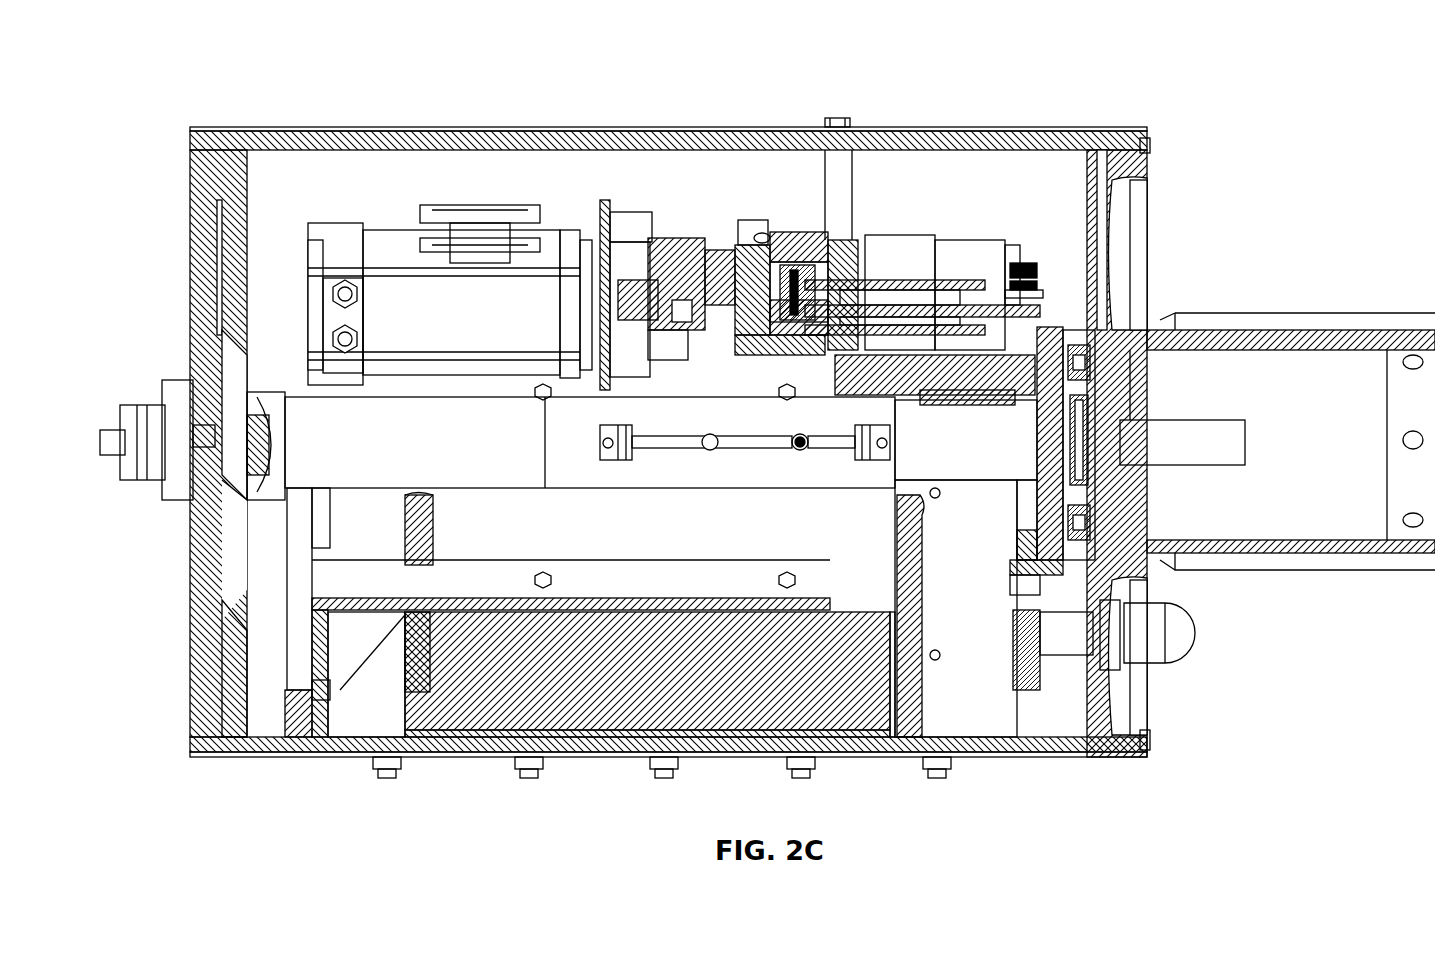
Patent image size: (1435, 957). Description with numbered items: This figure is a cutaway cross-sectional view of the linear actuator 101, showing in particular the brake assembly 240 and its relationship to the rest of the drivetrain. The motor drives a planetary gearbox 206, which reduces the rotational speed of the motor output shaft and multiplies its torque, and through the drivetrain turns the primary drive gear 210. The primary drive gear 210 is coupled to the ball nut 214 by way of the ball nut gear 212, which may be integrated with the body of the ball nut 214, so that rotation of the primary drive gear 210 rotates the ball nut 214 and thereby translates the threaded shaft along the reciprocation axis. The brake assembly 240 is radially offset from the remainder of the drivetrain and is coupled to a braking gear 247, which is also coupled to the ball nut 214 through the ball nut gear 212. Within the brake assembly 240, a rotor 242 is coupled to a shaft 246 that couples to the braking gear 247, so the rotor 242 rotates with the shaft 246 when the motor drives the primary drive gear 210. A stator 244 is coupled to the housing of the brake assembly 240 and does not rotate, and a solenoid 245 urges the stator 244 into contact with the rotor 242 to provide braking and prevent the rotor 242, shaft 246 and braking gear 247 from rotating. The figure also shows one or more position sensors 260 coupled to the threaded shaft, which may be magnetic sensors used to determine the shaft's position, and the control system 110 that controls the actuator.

The linear actuator 101 is at (190, 93).
The control system 110 is at (706, 536).
The planetary gearbox 206 is at (605, 215).
The primary drive gear 210 is at (1026, 262).
The ball nut gear 212 is at (1085, 385).
The ball nut 214 is at (965, 468).
The brake assembly 240 is at (802, 228).
The rotor 242 is at (808, 285).
The stator 244 is at (760, 262).
The solenoid 245 is at (728, 270).
The shaft 246 is at (868, 290).
The braking gear 247 is at (1112, 300).
The position sensors 260 is at (800, 452).